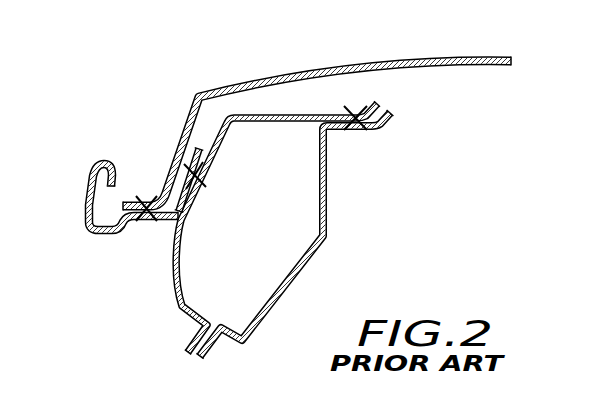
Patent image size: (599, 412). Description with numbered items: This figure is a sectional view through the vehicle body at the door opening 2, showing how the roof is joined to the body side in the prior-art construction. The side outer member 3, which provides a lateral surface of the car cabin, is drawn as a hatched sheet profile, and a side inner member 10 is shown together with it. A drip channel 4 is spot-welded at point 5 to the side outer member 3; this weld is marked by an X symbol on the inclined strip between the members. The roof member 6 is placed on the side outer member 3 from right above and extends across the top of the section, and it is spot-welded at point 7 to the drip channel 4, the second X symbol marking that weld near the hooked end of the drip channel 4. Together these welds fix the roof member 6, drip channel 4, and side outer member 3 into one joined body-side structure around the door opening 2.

The door opening 2 is at (138, 288).
The side outer member 3 is at (173, 272).
The drip channel 4 is at (92, 231).
The spot-weld point 5 is at (212, 177).
The roof member 6 is at (389, 59).
The spot-weld point 7 is at (143, 225).
The side inner member 10 is at (294, 272).